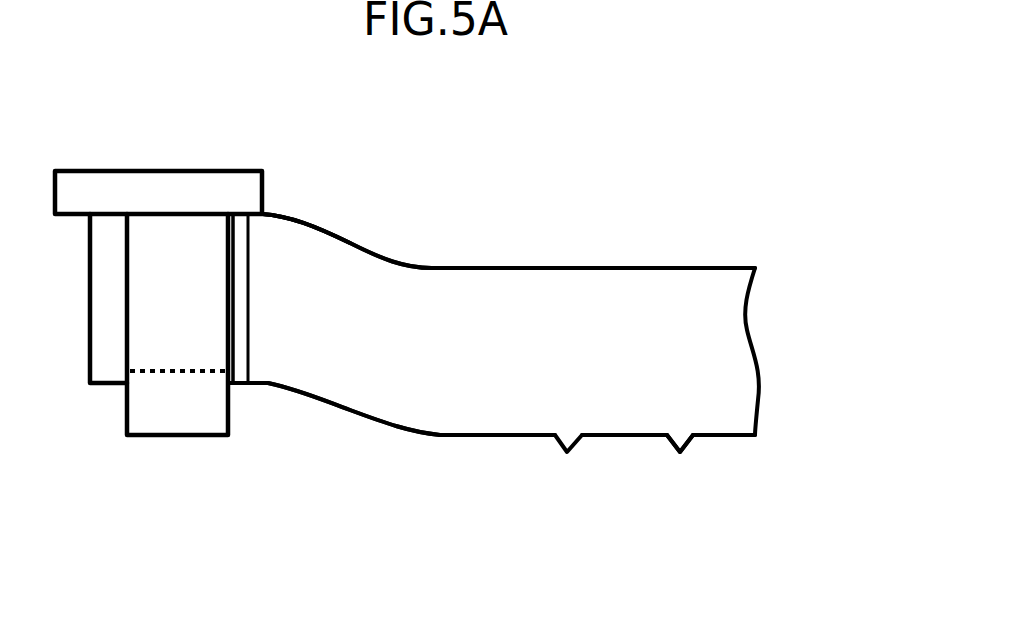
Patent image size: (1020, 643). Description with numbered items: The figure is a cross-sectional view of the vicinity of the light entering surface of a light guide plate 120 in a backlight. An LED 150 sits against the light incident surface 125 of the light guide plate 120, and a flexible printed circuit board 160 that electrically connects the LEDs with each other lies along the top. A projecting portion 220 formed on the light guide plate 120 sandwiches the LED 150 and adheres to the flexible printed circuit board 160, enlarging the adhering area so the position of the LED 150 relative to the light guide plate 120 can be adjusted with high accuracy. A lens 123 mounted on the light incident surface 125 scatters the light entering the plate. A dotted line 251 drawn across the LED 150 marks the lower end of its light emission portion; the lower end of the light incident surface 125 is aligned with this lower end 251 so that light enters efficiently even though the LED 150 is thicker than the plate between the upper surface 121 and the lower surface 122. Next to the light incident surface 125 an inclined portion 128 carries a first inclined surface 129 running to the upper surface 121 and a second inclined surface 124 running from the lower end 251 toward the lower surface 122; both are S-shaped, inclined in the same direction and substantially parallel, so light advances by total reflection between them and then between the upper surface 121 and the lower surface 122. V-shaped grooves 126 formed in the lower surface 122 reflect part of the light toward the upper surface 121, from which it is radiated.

The light guide plate 120 is at (498, 403).
The upper surface 121 is at (619, 268).
The lower surface 122 is at (615, 437).
The lens 123 is at (242, 384).
The second inclined surface 124 is at (318, 397).
The light incident surface 125 is at (250, 313).
The grooves 126 is at (680, 452).
The inclined portion 128 is at (353, 270).
The first inclined surface 129 is at (323, 226).
The LED 150 is at (205, 423).
The flexible printed circuit board 160 is at (166, 180).
The projecting portions 220 is at (100, 378).
The dotted line 251 is at (152, 375).